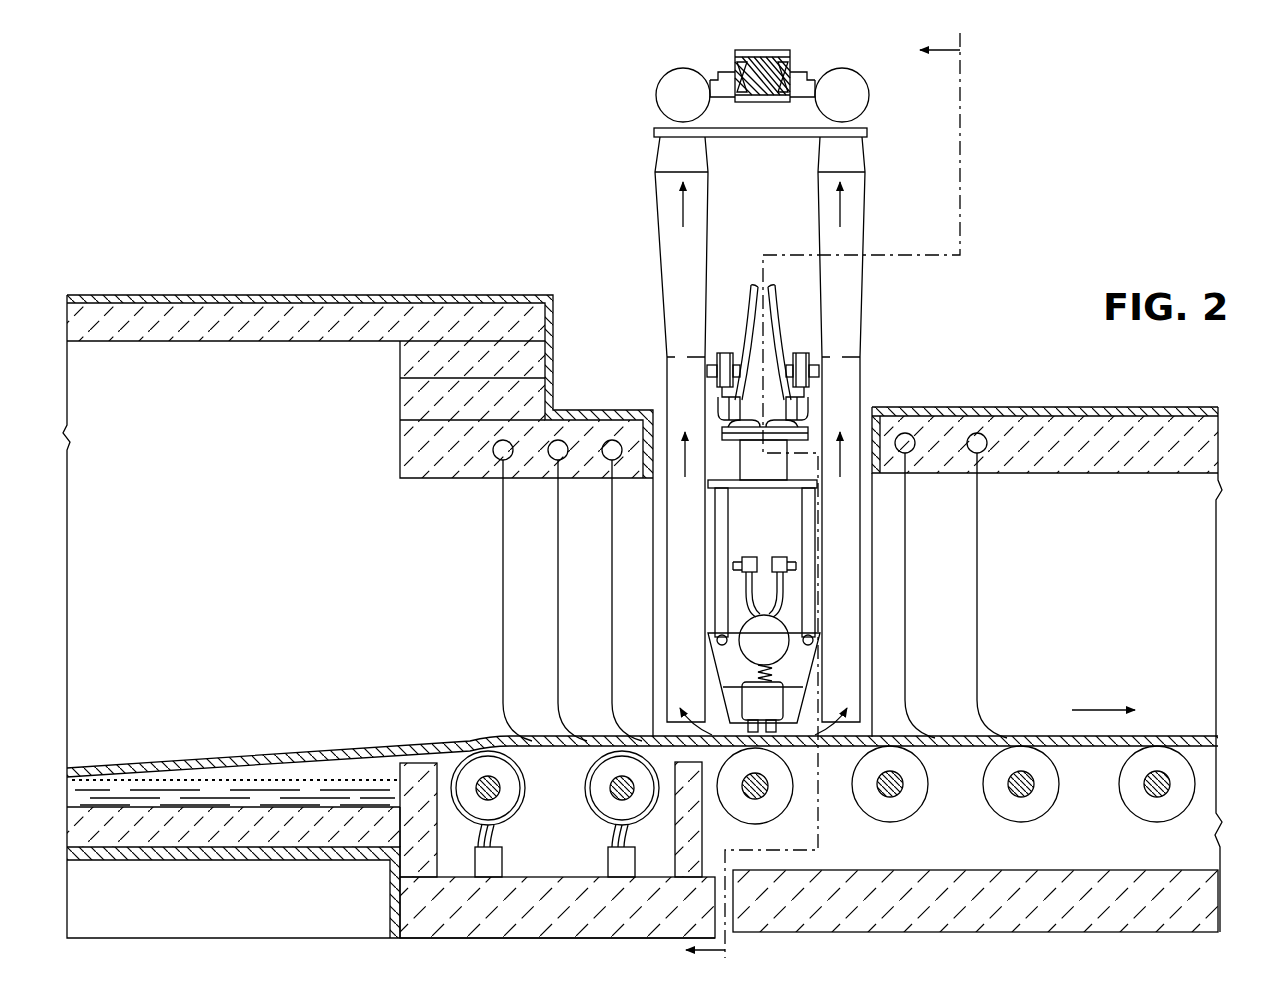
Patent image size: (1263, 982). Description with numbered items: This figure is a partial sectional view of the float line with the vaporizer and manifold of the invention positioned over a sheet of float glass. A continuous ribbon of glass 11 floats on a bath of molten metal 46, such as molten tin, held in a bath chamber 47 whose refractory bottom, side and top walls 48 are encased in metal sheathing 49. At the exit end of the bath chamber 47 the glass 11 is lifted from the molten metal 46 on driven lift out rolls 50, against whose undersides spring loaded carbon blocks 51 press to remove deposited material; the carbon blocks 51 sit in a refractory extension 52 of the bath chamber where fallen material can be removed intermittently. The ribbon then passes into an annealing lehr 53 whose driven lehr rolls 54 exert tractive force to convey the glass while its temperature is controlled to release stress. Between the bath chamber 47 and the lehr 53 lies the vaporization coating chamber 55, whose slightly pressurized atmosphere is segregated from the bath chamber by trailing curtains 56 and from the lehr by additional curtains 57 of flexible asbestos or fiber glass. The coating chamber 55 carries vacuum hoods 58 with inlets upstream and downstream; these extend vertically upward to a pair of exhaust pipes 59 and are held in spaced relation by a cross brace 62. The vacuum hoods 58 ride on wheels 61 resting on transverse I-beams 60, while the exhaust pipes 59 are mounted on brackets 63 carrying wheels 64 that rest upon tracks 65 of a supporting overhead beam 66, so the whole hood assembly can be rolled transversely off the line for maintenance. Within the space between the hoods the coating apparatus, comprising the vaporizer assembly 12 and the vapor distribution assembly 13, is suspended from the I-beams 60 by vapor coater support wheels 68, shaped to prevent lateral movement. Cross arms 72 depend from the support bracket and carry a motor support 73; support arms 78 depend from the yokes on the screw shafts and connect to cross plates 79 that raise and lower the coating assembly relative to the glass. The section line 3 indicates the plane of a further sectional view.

The section line 3- 3 is at (843, 502).
The sheet of glass 11 is at (362, 750).
The vaporizer assembly 12 is at (776, 656).
The vapor distribution assembly 13 is at (776, 717).
The bath of molten metal 46 is at (290, 797).
The bath chamber 47 is at (189, 546).
The refractory walls 48 is at (398, 430).
The metal sheathing 49 is at (452, 293).
The lift out rolls 50 is at (600, 808).
The carbon blocks 51 is at (605, 841).
The refractory extension 52 is at (590, 878).
The annealing lehr 53 is at (1138, 638).
The lehr rolls 54 is at (757, 822).
The vaporization coating chamber 55 is at (652, 658).
The curtains 56 is at (612, 605).
The curtains 57 is at (977, 553).
The vacuum hoods 58 is at (667, 358).
The exhaust pipes 59 is at (656, 96).
The I-beams 60 is at (748, 340).
The wheels 61 is at (733, 340).
The cross brace 62 is at (788, 138).
The brackets 63 is at (806, 110).
The wheels 64 is at (735, 68).
The tracks 65 is at (740, 96).
The supporting overhead beam 66 is at (760, 50).
The vapor coater support wheels 68 is at (785, 285).
The vapor coater cross arms 72 is at (775, 468).
The motor support 73 is at (788, 490).
The support arms 78 is at (803, 542).
The cross plates 79 is at (746, 686).